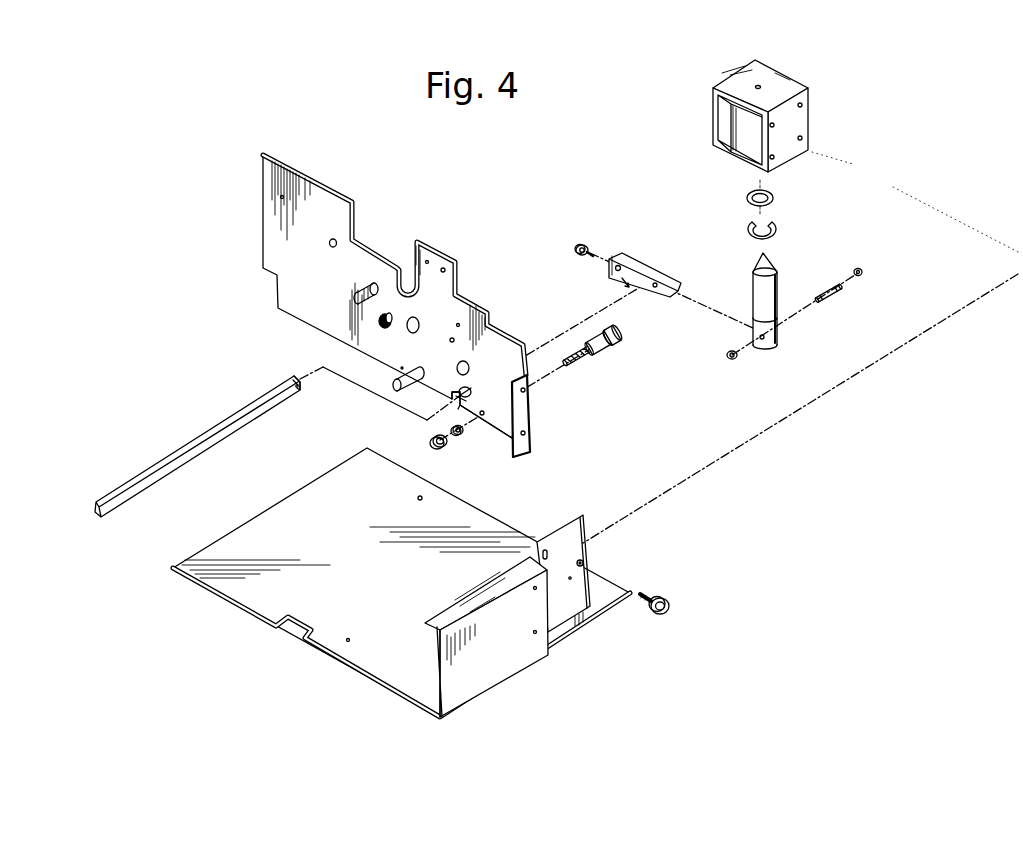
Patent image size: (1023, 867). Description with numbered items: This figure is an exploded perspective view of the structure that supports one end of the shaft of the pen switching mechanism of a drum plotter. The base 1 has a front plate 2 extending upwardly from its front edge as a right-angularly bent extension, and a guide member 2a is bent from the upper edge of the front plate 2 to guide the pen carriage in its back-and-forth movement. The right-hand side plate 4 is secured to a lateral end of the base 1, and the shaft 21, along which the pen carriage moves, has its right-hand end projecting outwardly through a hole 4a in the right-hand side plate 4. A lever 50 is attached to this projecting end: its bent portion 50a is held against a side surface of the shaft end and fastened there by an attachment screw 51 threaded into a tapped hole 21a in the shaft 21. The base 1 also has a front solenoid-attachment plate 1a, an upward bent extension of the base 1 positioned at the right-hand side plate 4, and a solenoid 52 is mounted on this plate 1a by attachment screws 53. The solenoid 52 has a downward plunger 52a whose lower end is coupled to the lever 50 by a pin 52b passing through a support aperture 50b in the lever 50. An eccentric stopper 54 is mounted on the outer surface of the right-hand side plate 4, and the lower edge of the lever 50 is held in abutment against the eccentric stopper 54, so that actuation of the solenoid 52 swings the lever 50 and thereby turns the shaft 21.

The base 1 is at (370, 667).
The front solenoid-attachment plate 1a is at (567, 517).
The front plate 2 is at (495, 673).
The guide member 2a is at (447, 614).
The right-hand side plate 4 is at (291, 305).
The hole 4a is at (459, 404).
The shaft 21 is at (168, 457).
The tapped hole 21a is at (297, 392).
The lever 50 is at (644, 262).
The bent portion 50a is at (617, 255).
The support aperture 50b is at (655, 292).
The attachment screw 51 is at (582, 243).
The solenoid 52 is at (800, 86).
The plunger 52a is at (776, 292).
The pin 52b is at (828, 300).
The attachment screws 53 is at (658, 600).
The eccentric stopper 54 is at (622, 335).